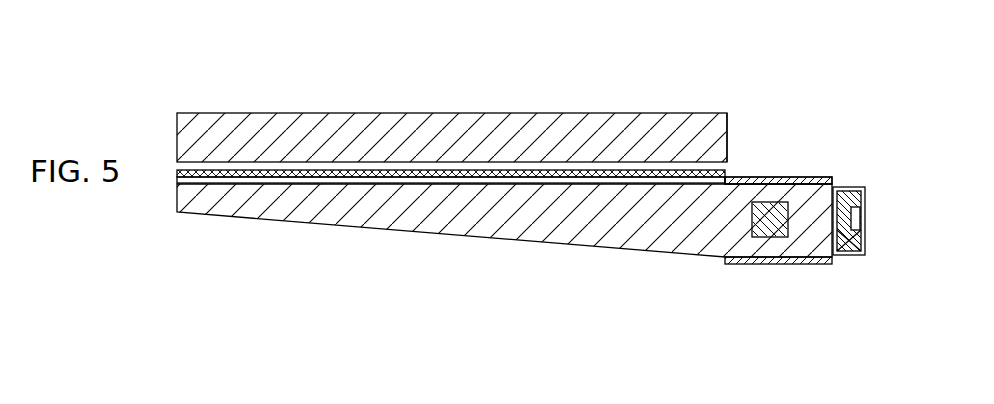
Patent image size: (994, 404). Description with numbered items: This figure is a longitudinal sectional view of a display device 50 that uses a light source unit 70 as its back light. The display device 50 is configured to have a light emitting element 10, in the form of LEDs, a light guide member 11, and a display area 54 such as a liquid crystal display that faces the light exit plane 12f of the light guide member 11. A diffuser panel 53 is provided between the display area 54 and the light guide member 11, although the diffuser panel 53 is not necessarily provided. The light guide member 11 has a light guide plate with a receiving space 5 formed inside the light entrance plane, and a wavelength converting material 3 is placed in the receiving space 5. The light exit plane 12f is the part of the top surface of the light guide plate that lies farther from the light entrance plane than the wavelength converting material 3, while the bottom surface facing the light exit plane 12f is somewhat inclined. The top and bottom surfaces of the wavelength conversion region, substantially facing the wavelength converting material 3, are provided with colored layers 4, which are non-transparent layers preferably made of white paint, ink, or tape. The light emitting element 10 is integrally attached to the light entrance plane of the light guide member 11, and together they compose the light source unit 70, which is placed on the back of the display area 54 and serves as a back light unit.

The display device 50 is at (502, 92).
The display area 54 is at (728, 118).
The diffuser panel 53 is at (727, 170).
The light guide member 11 is at (235, 182).
The light exit plane 12f is at (340, 185).
The colored layer 4 is at (832, 177).
The light source unit 70 is at (815, 163).
The wavelength converting material 3 is at (762, 238).
The receiving space 5 is at (779, 231).
The light emitting element 10 is at (853, 188).